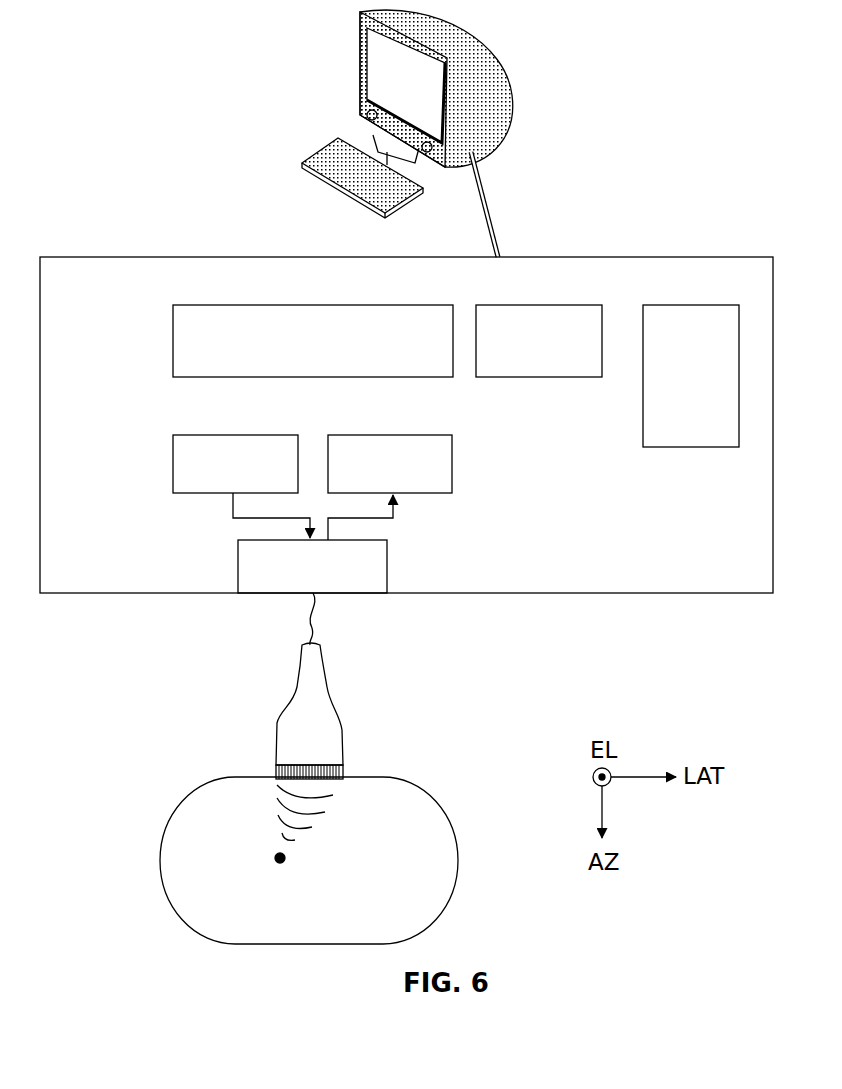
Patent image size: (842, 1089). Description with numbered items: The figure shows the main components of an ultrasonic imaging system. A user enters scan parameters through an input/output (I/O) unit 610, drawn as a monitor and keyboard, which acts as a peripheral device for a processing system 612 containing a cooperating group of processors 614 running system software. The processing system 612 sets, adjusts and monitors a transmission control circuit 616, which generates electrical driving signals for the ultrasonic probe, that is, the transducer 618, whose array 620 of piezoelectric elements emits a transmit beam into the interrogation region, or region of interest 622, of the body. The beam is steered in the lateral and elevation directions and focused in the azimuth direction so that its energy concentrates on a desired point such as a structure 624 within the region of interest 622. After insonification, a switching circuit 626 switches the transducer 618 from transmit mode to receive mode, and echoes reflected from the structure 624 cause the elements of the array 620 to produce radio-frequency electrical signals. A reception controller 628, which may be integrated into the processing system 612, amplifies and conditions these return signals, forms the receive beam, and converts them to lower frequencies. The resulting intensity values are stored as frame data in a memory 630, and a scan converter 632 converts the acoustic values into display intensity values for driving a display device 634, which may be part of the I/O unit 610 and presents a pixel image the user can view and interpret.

The input/output (I/O) unit 610 is at (363, 133).
The processing system 612 is at (88, 254).
The processors 614 is at (173, 337).
The transmission control circuit 616 is at (173, 462).
The transducer 618 is at (345, 740).
The array 620 is at (276, 772).
The region of interest 622 is at (417, 790).
The structure 624 is at (285, 858).
The switching circuit 626 is at (238, 570).
The reception controller 628 is at (453, 462).
The memory 630 is at (665, 448).
The scan converter 632 is at (520, 377).
The display device 634 is at (383, 82).